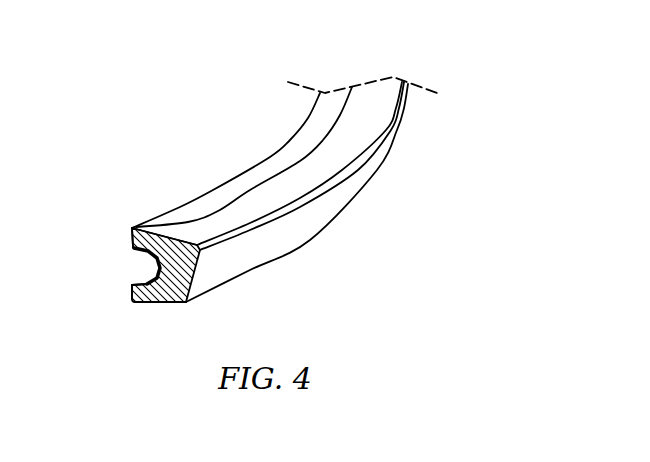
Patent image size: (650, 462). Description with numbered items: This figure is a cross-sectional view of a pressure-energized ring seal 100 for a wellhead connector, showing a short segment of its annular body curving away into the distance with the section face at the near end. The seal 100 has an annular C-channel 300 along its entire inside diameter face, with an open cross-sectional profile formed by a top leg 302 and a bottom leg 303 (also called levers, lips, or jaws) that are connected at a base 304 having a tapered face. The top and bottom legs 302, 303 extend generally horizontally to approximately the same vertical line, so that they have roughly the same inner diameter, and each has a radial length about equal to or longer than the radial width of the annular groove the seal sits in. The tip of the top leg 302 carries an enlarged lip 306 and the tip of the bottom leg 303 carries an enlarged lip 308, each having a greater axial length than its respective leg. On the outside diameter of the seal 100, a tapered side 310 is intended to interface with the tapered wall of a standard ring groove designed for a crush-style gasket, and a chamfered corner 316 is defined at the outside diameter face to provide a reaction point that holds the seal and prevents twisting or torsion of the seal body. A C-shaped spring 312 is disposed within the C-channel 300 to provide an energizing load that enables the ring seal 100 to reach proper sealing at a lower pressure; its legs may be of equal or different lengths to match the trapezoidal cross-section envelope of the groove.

The seal 100 is at (397, 126).
The C-channel 300 is at (125, 273).
The top leg 302 is at (134, 226).
The bottom leg 303 is at (139, 299).
The base 304 is at (157, 300).
The enlarged tip 306 is at (133, 237).
The enlarged tip 308 is at (132, 295).
The tapered side 310 is at (287, 238).
The C-shaped spring 312 is at (138, 254).
The chamfered corner 316 is at (332, 190).